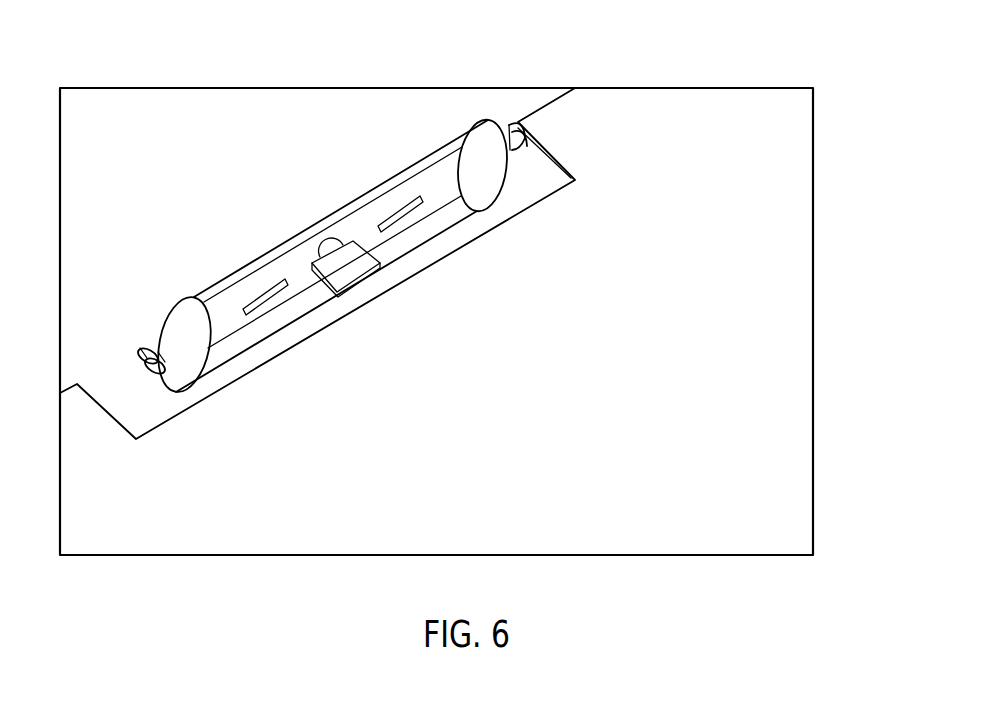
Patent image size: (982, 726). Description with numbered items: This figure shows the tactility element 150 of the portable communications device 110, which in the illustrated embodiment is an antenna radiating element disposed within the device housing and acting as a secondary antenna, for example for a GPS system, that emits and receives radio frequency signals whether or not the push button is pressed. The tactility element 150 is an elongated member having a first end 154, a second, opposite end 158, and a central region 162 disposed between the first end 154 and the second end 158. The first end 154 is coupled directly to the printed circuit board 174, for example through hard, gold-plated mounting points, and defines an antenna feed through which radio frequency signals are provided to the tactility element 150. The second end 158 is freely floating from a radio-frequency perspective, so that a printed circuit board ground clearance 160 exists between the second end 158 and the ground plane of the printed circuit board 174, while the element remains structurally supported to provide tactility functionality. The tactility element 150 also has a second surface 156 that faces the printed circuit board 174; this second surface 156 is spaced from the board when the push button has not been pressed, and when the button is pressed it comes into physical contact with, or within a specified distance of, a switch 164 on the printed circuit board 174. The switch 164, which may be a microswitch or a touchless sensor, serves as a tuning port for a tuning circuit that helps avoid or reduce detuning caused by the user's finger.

The portable communications device 110 is at (112, 48).
The tactility element 150 is at (232, 252).
The first end 154 is at (527, 131).
The second surface 156 is at (442, 188).
The second end 158 is at (141, 352).
The printed circuit board ground clearance 160 is at (148, 410).
The central region 162 is at (322, 246).
The switch 164 is at (348, 268).
The printed circuit board 174 is at (743, 143).